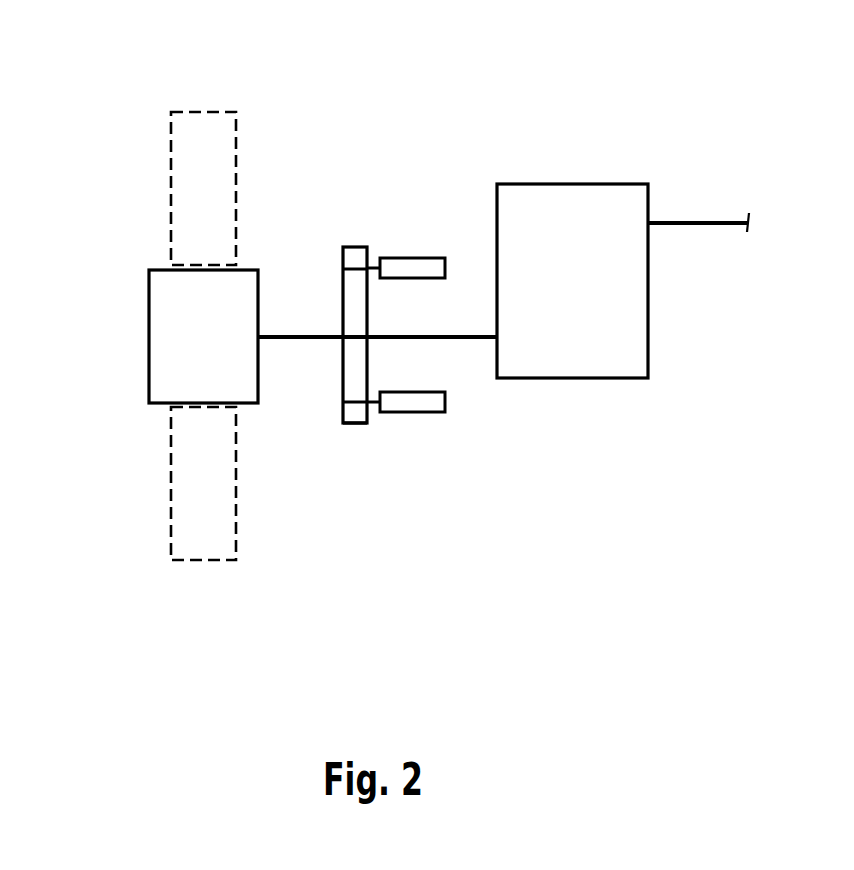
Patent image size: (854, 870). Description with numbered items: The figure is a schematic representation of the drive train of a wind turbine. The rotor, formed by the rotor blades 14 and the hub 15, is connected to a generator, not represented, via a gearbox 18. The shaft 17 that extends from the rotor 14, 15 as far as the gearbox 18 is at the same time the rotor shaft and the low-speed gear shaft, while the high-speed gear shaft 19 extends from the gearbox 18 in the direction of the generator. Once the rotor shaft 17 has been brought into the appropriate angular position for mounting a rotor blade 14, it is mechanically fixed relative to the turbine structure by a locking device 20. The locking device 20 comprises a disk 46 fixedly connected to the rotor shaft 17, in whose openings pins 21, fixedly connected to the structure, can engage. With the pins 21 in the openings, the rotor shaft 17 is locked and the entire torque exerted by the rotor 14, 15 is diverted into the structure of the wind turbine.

The rotor blade 14 is at (210, 110).
The hub 15 is at (148, 338).
The rotor shaft 17 is at (294, 333).
The gearbox 18 is at (577, 184).
The high-speed gear shaft 19 is at (706, 222).
The locking device 20 is at (362, 220).
The pin 21 is at (415, 258).
The disk 46 is at (350, 425).